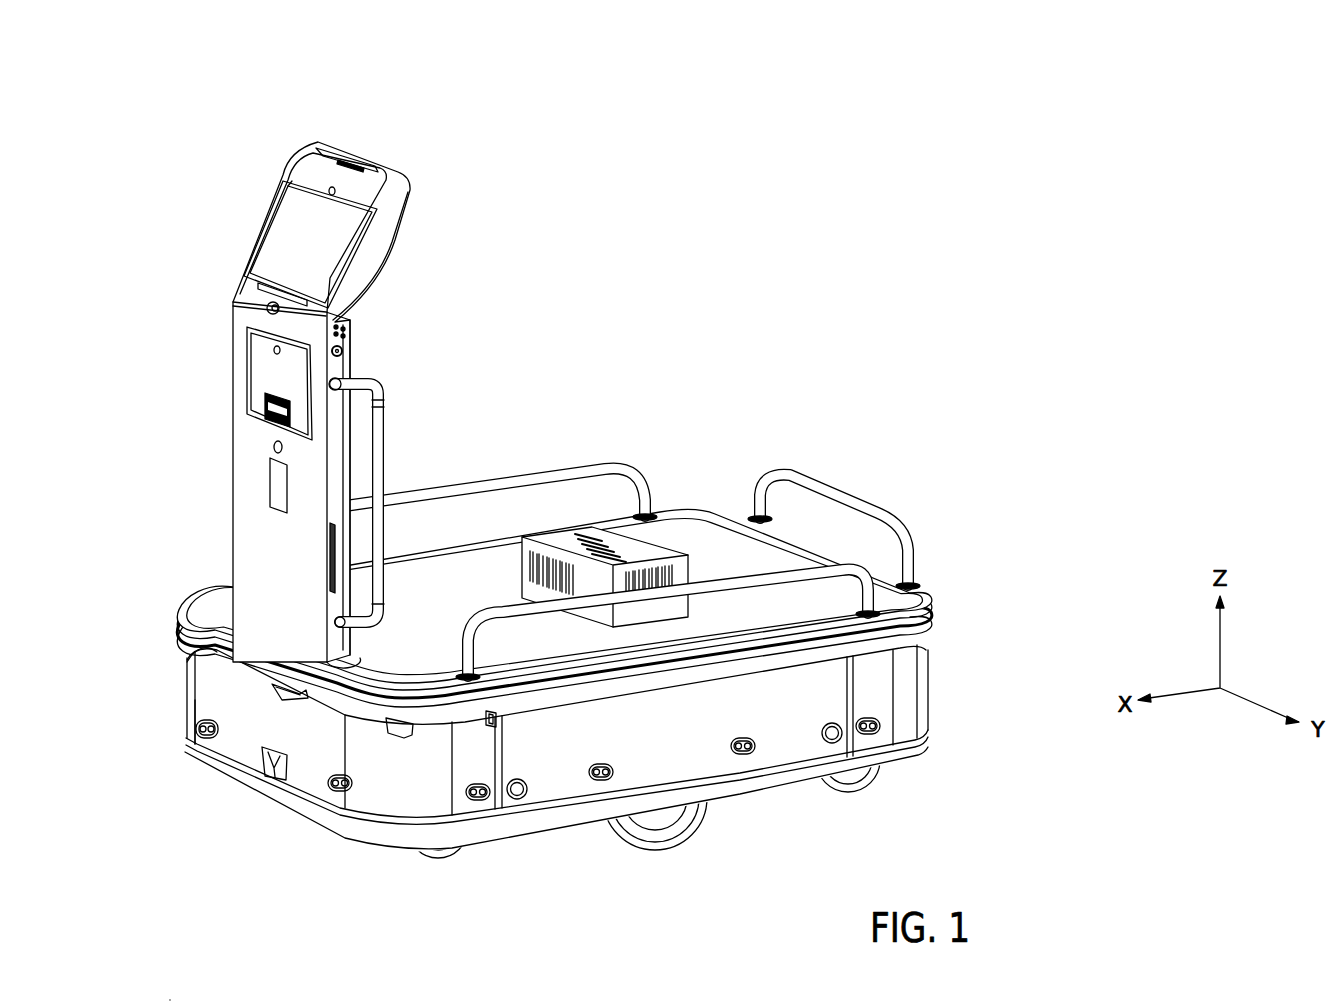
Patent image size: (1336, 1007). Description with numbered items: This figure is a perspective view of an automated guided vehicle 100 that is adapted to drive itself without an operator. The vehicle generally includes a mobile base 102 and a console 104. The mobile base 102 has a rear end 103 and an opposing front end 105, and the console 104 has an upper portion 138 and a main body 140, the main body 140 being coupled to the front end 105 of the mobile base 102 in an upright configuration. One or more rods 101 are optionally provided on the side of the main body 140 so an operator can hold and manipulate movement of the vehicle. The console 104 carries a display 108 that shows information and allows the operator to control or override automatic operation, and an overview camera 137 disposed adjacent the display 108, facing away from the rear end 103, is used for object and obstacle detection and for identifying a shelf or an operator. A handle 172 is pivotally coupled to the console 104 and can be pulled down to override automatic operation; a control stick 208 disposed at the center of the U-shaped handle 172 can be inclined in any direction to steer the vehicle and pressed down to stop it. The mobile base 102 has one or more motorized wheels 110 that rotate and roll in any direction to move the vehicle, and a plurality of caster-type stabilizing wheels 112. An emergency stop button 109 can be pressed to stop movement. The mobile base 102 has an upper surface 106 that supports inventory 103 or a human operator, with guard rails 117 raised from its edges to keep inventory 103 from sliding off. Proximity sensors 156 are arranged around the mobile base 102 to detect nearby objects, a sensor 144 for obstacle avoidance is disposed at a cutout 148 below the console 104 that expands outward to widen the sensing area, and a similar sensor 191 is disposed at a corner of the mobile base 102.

The automated guided vehicle (AGV) 100 is at (465, 70).
The rods 101 is at (380, 472).
The mobile base 102 is at (548, 772).
The rear end / inventory 103 is at (568, 534).
The console 104 is at (300, 378).
The front end 105 is at (216, 703).
The upper surface 106 is at (716, 538).
The display 108 is at (270, 256).
The emergency stop button 109 is at (518, 792).
The motorized wheels 110 is at (668, 835).
The stabilizing wheels 112 is at (440, 864).
The guard rails 117 is at (507, 482).
The overview camera 137 is at (327, 191).
The upper portion 138 is at (292, 181).
The main body 140 is at (240, 443).
The sensor 144 is at (285, 694).
The cutout 148 is at (216, 667).
The sensors 156 is at (200, 725).
The handle 172 is at (397, 192).
The sensor 191 is at (400, 732).
The control stick 208 is at (352, 158).